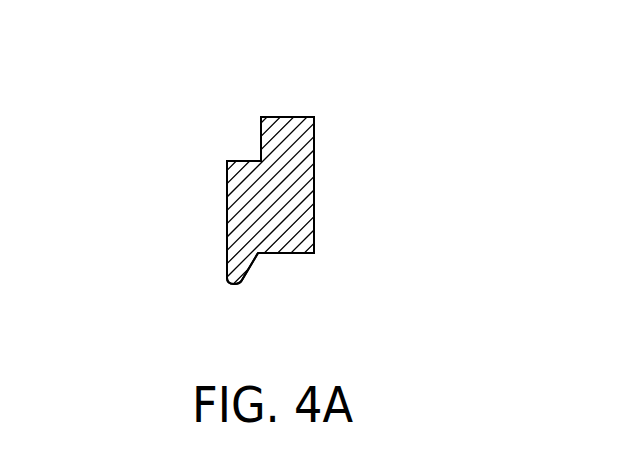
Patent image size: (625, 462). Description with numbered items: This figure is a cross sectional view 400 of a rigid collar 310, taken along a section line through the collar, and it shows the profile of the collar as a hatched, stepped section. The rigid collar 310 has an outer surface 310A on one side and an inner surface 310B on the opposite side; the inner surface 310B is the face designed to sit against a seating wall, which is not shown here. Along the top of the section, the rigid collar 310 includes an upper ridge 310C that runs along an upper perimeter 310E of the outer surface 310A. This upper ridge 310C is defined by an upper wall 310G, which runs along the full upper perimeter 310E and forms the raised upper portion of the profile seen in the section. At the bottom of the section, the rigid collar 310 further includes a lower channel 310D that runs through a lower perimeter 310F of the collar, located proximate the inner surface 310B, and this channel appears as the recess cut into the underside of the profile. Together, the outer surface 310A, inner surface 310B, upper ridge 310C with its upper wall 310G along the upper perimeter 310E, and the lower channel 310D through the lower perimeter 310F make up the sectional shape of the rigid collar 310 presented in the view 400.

The rigid collar 310 is at (325, 105).
The outer surface 310A is at (227, 215).
The inner surface 310B is at (315, 190).
The upper ridge 310C is at (239, 160).
The lower channel 310D is at (289, 253).
The upper perimeter 310E is at (212, 170).
The lower perimeter 310F is at (225, 288).
The upper wall 310G is at (287, 123).
The cross sectional view 400 is at (496, 128).